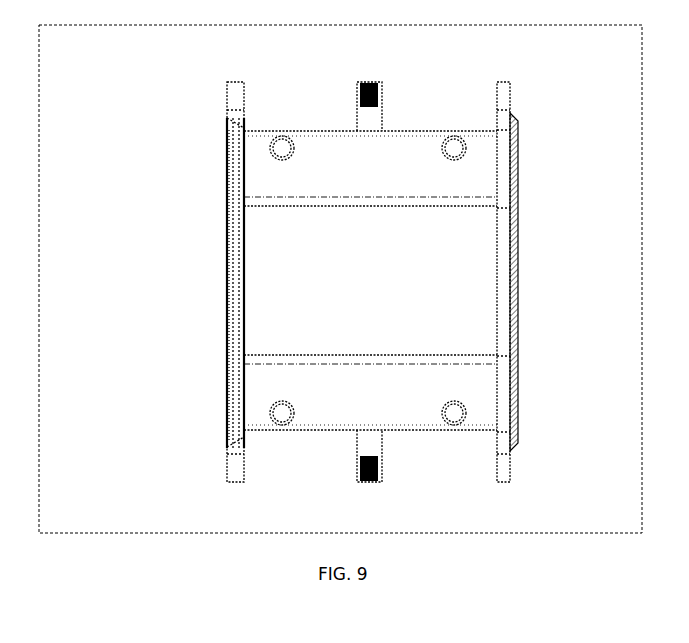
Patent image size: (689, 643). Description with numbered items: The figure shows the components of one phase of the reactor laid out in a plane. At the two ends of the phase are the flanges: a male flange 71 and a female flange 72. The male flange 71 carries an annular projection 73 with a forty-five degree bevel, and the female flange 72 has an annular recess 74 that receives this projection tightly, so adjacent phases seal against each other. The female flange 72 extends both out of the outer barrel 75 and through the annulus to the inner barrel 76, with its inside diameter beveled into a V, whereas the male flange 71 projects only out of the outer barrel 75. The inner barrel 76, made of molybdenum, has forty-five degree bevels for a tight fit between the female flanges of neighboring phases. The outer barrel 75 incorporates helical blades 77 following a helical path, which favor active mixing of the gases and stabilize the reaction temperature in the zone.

The male flange 71 is at (494, 97).
The female flange 72 is at (222, 97).
The projection 73 is at (523, 112).
The recess 74 is at (220, 125).
The outer barrel 75 is at (303, 117).
The inner barrel 76 is at (476, 189).
The helical blades 77 is at (370, 283).